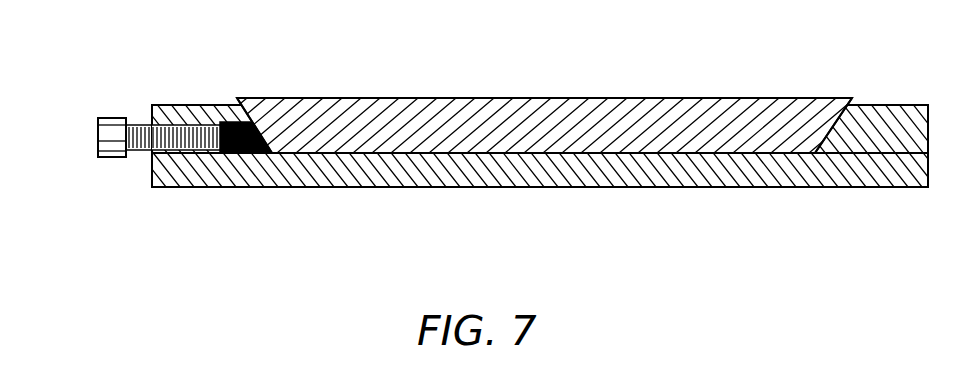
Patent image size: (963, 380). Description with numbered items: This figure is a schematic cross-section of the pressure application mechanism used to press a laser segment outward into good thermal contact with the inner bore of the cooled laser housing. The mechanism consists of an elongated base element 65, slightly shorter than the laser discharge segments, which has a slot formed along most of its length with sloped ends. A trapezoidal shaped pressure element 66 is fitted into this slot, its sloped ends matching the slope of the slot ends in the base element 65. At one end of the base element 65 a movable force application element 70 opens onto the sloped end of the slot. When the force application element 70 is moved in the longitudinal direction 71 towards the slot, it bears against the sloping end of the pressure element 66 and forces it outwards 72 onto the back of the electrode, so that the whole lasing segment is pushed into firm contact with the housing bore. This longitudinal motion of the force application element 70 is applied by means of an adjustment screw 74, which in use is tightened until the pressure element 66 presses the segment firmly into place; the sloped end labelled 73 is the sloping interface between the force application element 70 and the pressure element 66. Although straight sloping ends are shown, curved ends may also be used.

The elongated base element 65 is at (899, 105).
The trapezoidal shaped pressure element 66 is at (789, 98).
The force application element 70 is at (235, 152).
The longitudinal direction 71 is at (114, 103).
The outward direction 72 is at (525, 92).
The beveled edge of plate 73 is at (262, 137).
The adjustment screw 74 is at (107, 118).